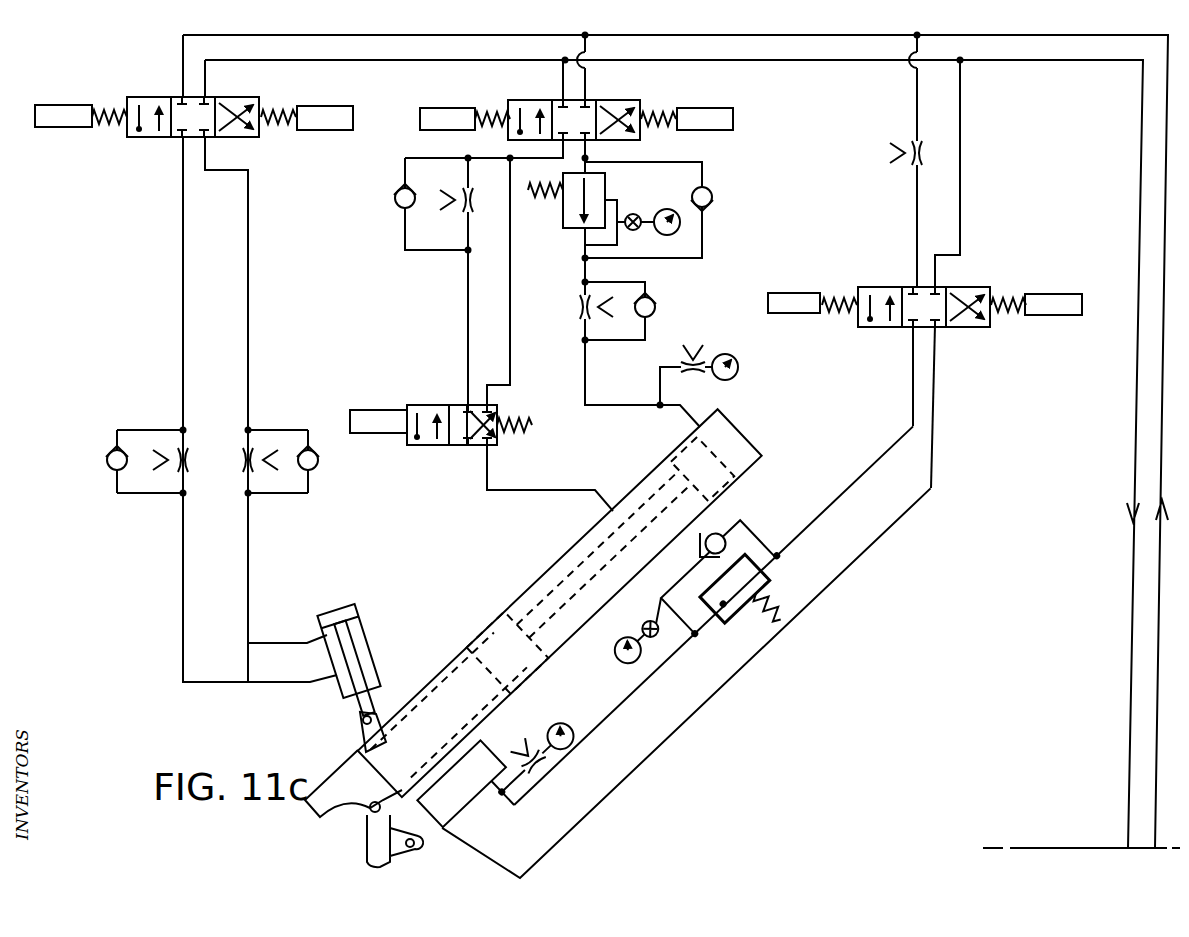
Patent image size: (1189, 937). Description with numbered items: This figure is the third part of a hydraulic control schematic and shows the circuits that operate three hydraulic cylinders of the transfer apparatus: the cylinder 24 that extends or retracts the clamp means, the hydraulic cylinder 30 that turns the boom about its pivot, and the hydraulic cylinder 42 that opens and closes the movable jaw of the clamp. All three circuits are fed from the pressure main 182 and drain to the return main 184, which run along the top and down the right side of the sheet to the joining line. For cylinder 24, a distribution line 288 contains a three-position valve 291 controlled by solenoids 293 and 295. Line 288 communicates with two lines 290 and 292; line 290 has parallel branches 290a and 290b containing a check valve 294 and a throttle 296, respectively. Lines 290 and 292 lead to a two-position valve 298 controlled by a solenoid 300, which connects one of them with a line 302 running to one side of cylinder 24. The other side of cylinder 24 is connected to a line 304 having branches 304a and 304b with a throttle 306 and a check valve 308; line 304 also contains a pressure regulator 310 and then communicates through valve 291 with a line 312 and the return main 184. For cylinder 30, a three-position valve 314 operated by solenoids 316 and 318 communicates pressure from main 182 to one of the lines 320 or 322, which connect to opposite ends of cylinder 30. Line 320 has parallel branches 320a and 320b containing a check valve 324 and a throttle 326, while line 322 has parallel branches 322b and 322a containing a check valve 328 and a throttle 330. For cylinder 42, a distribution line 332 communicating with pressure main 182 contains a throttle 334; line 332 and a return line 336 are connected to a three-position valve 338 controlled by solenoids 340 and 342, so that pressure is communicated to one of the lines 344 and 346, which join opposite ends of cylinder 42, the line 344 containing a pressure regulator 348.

The pressure main 182 is at (720, 36).
The return main 184 is at (832, 61).
The three-position valve 314 is at (140, 140).
The solenoid 316 is at (65, 104).
The solenoid 318 is at (326, 104).
The distribution line 288 is at (588, 81).
The line 312 is at (562, 82).
The three-position valve 291 is at (641, 107).
The solenoid 293 is at (448, 108).
The solenoid 295 is at (738, 110).
The line 290 is at (405, 157).
The parallel branch 290a is at (402, 238).
The parallel branch 290b is at (466, 252).
The check valve 294 is at (394, 195).
The throttle 296 is at (464, 213).
The line 292 is at (511, 250).
The pressure regulator 310 is at (716, 215).
The line 304 is at (602, 405).
The branch 304a is at (580, 330).
The branch 304b is at (650, 338).
The throttle 306 is at (574, 302).
The check valve 308 is at (656, 302).
The distribution line 332 is at (913, 130).
The throttle 334 is at (905, 162).
The return line 336 is at (962, 124).
The three-position valve 338 is at (962, 285).
The solenoid 340 is at (784, 292).
The solenoid 342 is at (1050, 294).
The solenoid 300 is at (384, 410).
The two-position valve 298 is at (456, 448).
The line 302 is at (518, 492).
The line 320 is at (177, 298).
The line 322 is at (253, 203).
The parallel branch 320a is at (115, 478).
The parallel branch 320b is at (177, 482).
The parallel branch 322a is at (253, 502).
The parallel branch 322b is at (265, 428).
The check valve 324 is at (106, 448).
The throttle 326 is at (190, 456).
The check valve 328 is at (320, 470).
The throttle 330 is at (243, 478).
The hydraulic cylinder 30 is at (366, 645).
The cylinder 24 is at (730, 420).
The hydraulic cylinder 42 is at (528, 748).
The line 344 is at (870, 466).
The line 346 is at (884, 540).
The pressure regulator 348 is at (720, 620).